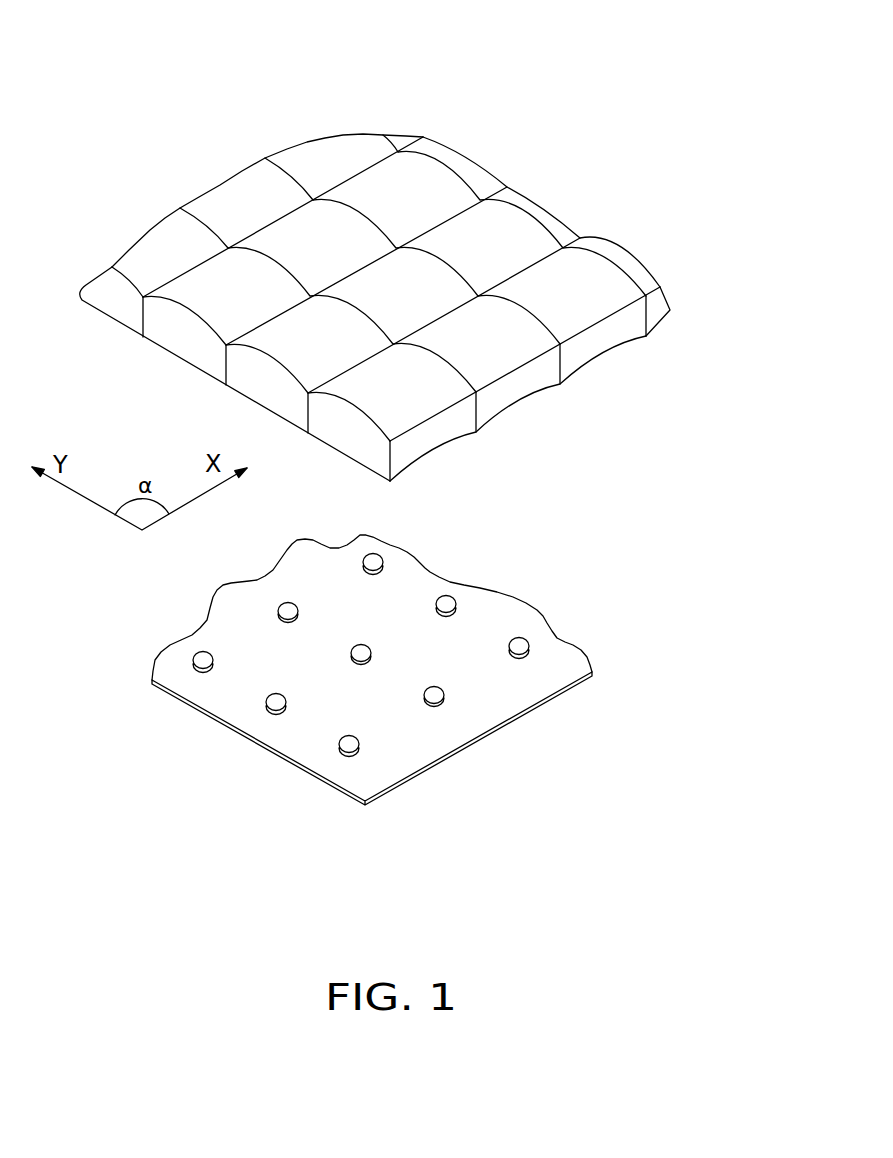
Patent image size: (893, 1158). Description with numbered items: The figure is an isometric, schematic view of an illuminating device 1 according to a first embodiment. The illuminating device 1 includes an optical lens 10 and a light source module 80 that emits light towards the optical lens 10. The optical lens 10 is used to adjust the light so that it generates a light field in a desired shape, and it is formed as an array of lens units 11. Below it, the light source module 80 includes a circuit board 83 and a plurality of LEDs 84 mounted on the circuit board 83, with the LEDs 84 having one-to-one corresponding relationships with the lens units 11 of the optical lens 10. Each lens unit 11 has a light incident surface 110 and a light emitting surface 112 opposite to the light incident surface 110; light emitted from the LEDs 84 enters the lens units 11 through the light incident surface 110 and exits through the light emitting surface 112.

The illuminating device 1 is at (267, 68).
The optical lens 10 is at (568, 205).
The light emitting surface 112 is at (605, 297).
The lens unit 11 is at (603, 333).
The light incident surface 110 is at (578, 367).
The light source module 80 is at (452, 570).
The circuit board 83 is at (545, 668).
The LED 84 is at (513, 639).